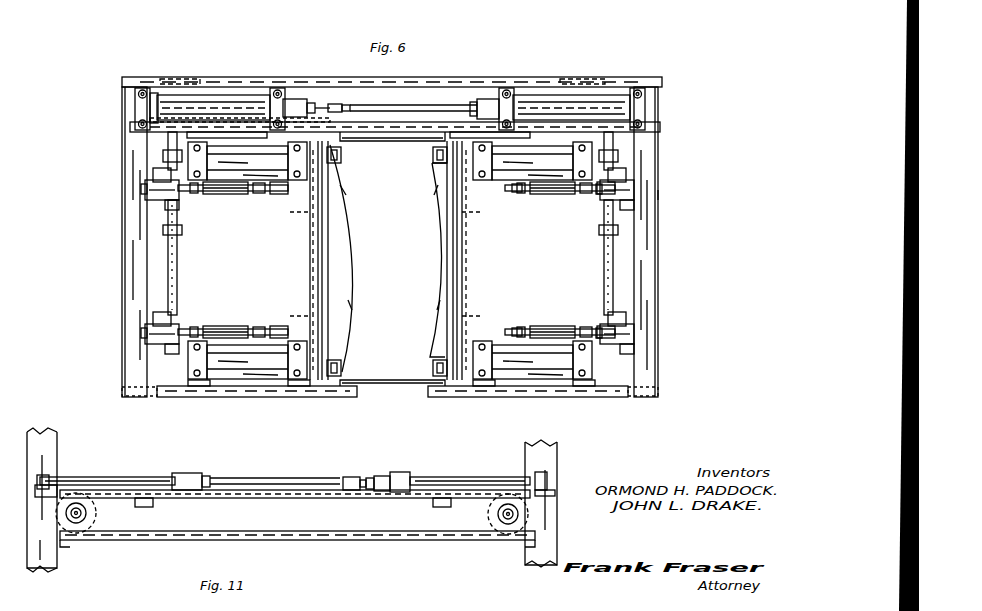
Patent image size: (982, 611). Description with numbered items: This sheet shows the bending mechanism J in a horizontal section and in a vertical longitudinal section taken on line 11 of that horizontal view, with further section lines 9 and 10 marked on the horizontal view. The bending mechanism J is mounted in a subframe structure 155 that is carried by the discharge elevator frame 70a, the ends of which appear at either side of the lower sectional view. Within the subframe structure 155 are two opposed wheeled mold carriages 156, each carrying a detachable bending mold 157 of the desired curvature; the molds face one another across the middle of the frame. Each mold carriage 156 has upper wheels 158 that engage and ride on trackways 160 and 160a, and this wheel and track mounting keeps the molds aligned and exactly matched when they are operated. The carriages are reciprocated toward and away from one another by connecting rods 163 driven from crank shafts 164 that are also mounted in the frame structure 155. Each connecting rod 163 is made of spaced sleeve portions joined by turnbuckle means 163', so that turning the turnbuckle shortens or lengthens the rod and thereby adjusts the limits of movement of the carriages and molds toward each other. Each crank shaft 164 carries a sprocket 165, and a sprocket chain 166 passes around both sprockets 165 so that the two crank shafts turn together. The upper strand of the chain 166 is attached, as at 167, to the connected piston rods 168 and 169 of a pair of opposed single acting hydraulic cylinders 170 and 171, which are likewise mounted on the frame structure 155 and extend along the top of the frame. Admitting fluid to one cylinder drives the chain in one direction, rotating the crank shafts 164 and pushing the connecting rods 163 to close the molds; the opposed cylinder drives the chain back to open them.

In FIG. 11, the discharge elevator frame 70a is at (44, 440).
In FIG. 6, the subframe structure 155 is at (135, 228).
In FIG. 11, the subframe structure 155 is at (187, 520).
In FIG. 6, the mold carriage 156 is at (309, 268).
In FIG. 6, the bending mold 157 is at (345, 228).
In FIG. 6, the upper wheel 158 is at (180, 383).
In FIG. 6, the trackway 160 is at (233, 132).
In FIG. 6, the trackway 160a is at (423, 141).
In FIG. 6, the connecting rod 163 is at (396, 260).
In FIG. 6, the turnbuckle means 163' is at (520, 260).
In FIG. 6, the crank shaft 164 is at (176, 243).
In FIG. 11, the crank shaft 164 is at (79, 508).
In FIG. 6, the sprocket 165 is at (143, 106).
In FIG. 11, the sprocket 165 is at (88, 515).
In FIG. 6, the sprocket chain 166 is at (230, 98).
In FIG. 11, the sprocket chain 166 is at (258, 498).
In FIG. 6, the attachment 167 is at (330, 100).
In FIG. 11, the attachment 167 is at (355, 478).
In FIG. 6, the piston rod 168 is at (441, 104).
In FIG. 11, the piston rod 168 is at (288, 479).
In FIG. 6, the piston rod 169 is at (316, 103).
In FIG. 11, the piston rod 169 is at (372, 492).
In FIG. 6, the hydraulic cylinder 170 is at (553, 100).
In FIG. 11, the hydraulic cylinder 170 is at (128, 482).
In FIG. 6, the hydraulic cylinder 171 is at (217, 103).
In FIG. 11, the hydraulic cylinder 171 is at (473, 480).
In FIG. 6, the section line 9- 9 is at (198, 76).
In FIG. 6, the section line 10- 10 is at (300, 132).
In FIG. 6, the section line 11- 11 is at (123, 103).
In FIG. 6, the bending mechanism J is at (658, 192).